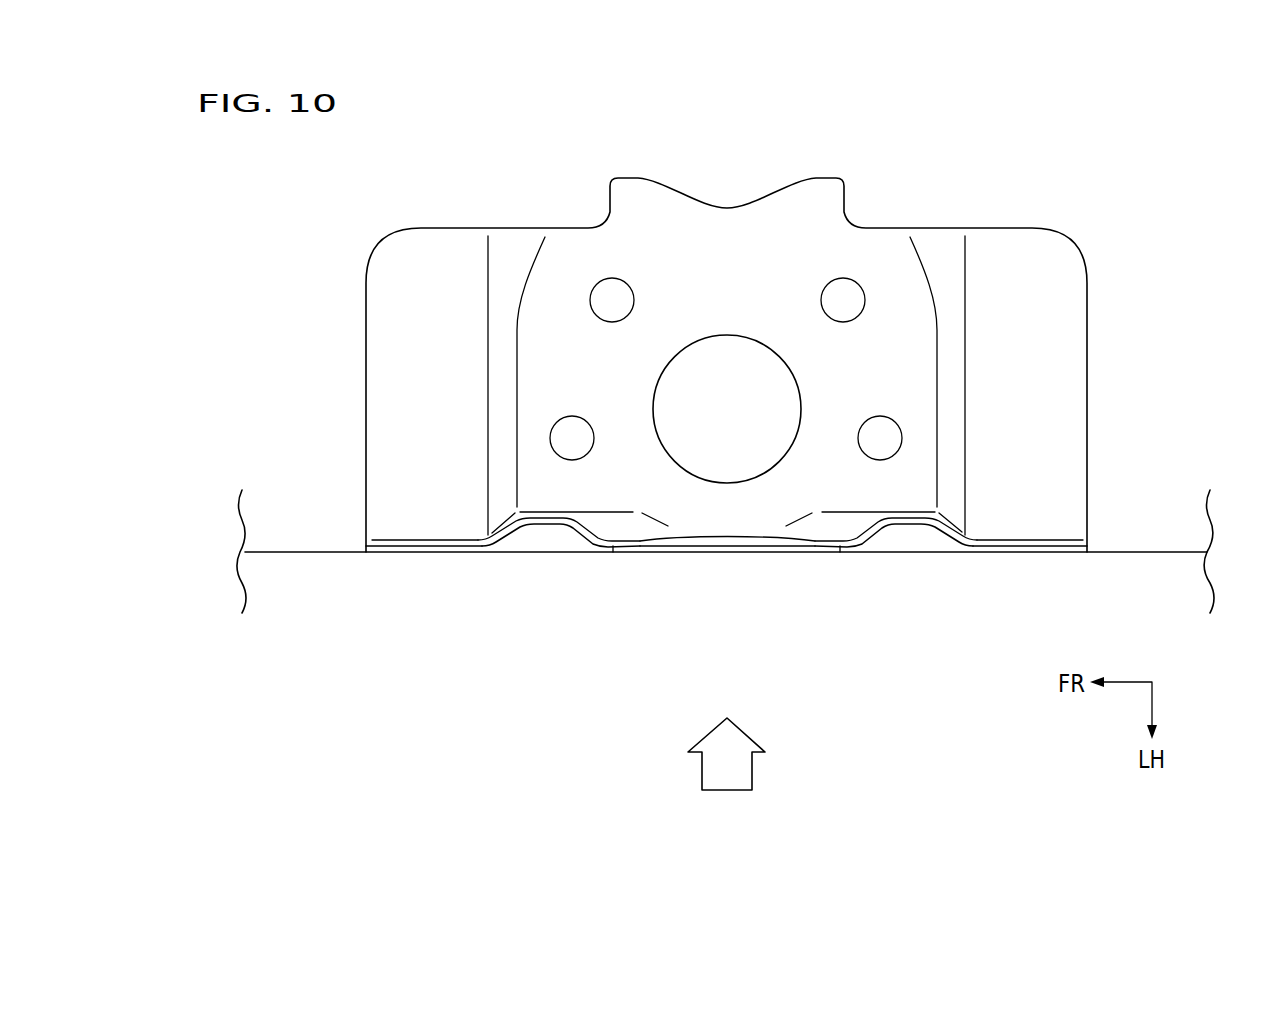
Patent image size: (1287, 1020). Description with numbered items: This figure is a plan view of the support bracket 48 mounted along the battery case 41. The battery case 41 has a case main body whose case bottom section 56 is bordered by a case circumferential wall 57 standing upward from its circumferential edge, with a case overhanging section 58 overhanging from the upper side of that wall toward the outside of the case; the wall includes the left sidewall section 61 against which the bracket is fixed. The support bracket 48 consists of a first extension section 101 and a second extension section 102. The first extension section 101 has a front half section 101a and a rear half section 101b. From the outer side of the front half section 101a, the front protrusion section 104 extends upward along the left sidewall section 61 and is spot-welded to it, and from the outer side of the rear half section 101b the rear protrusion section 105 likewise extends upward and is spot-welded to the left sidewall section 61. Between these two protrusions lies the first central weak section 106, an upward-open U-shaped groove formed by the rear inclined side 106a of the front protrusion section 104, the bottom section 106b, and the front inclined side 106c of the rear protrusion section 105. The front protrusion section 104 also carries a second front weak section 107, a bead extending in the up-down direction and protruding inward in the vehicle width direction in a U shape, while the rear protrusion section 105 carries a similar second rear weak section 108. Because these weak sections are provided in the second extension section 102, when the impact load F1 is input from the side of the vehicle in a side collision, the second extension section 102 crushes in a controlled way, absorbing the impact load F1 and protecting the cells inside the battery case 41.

The battery case 41 is at (353, 587).
The support bracket 48 is at (1203, 323).
The case bottom section 56 is at (323, 413).
The case circumferential wall 57 is at (241, 551).
The case overhanging section 58 is at (421, 580).
The left sidewall section 61 is at (235, 526).
The first extension section 101 is at (1060, 357).
The front half section 101a is at (593, 378).
The rear half section 101b is at (860, 378).
The second extension section 102 is at (1030, 542).
The front protrusion section 104 is at (455, 545).
The rear protrusion section 105 is at (1000, 545).
The first central weak section 106 is at (727, 607).
The rear inclined side 106a is at (645, 545).
The bottom section 106b is at (728, 545).
The front inclined side 106c is at (881, 584).
The second front weak section 107 is at (540, 517).
The second rear weak section 108 is at (915, 517).
The impact load F1 is at (752, 770).